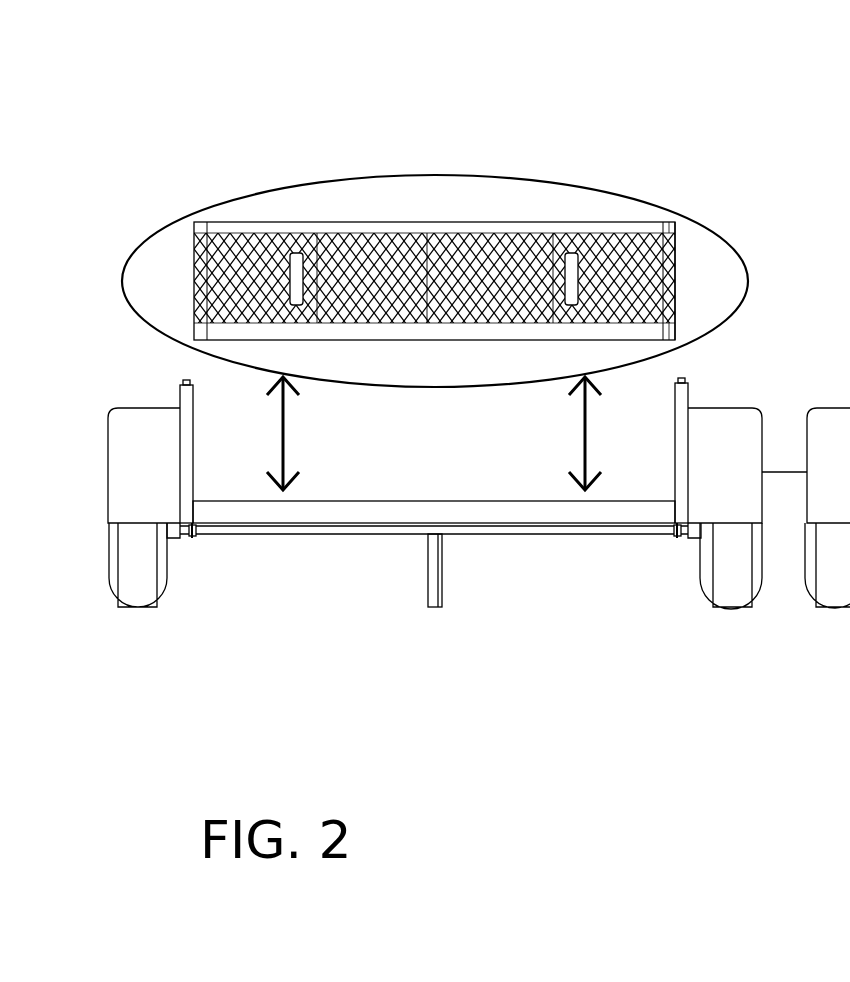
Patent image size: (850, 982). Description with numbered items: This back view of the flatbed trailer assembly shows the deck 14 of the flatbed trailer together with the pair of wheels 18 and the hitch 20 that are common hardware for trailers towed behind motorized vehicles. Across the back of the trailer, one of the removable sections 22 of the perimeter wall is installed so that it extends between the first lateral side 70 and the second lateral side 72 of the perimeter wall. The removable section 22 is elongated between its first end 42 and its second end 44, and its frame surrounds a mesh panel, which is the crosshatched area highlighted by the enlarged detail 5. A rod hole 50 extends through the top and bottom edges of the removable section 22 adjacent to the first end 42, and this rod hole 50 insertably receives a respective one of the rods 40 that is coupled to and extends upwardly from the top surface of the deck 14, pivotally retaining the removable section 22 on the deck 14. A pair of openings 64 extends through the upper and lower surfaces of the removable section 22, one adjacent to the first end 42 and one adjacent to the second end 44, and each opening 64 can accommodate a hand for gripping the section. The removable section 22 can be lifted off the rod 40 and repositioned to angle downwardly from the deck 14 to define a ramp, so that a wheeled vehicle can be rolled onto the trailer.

The seating assembly 5 is at (713, 235).
The deck 14 is at (245, 501).
The wheels 18 is at (152, 607).
The hitch 20 is at (440, 563).
The removable sections 22 is at (612, 222).
The rods 40 is at (687, 393).
The first end 42 is at (675, 248).
The second end 44 is at (194, 266).
The rod hole 50 is at (670, 207).
The openings 64 is at (299, 255).
The first lateral side 70 is at (180, 442).
The second lateral side 72 is at (688, 446).